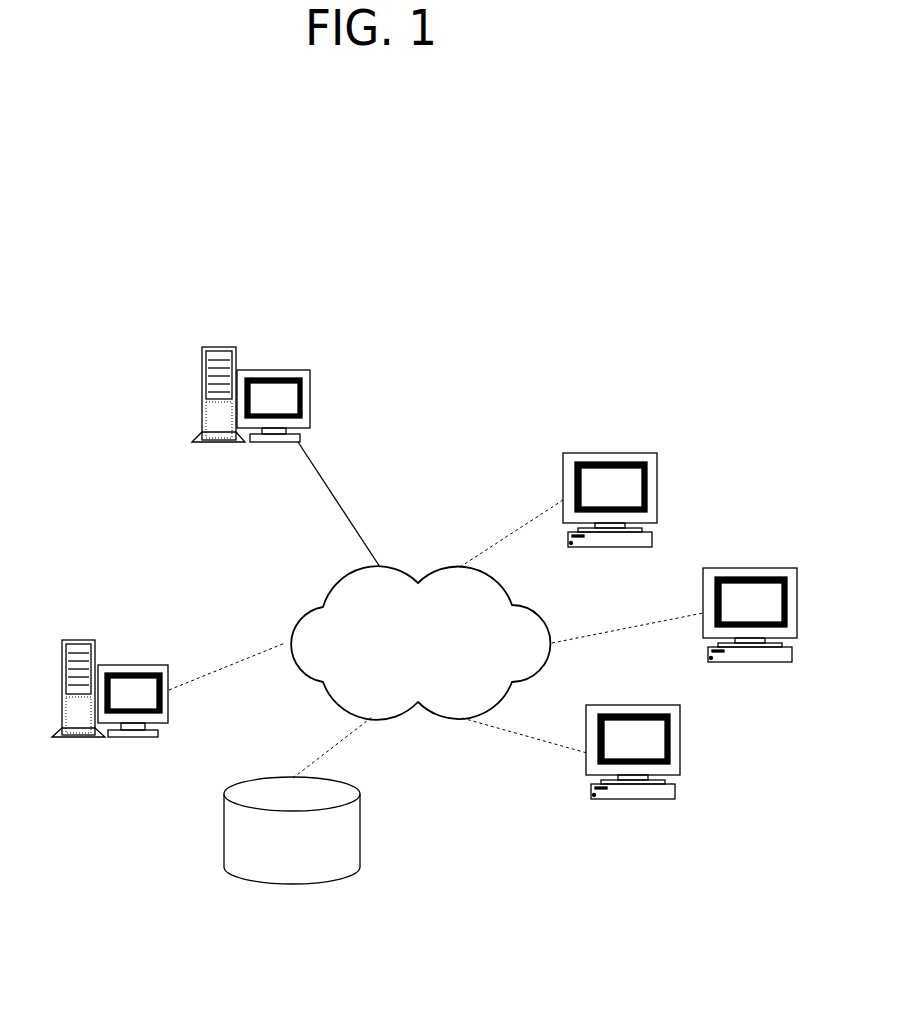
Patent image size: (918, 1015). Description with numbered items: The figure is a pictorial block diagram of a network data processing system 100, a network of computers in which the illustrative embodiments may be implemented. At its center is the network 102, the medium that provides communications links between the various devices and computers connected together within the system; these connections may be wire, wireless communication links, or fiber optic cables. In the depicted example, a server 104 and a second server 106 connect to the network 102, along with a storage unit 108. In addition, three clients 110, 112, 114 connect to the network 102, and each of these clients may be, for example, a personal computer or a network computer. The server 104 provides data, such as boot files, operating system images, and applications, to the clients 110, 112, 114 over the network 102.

The network data processing system 100 is at (103, 503).
The network 102 is at (437, 667).
The server 104 is at (273, 370).
The server 106 is at (134, 665).
The storage unit 108 is at (292, 883).
The client 110 is at (610, 453).
The client 112 is at (750, 568).
The client 114 is at (681, 752).